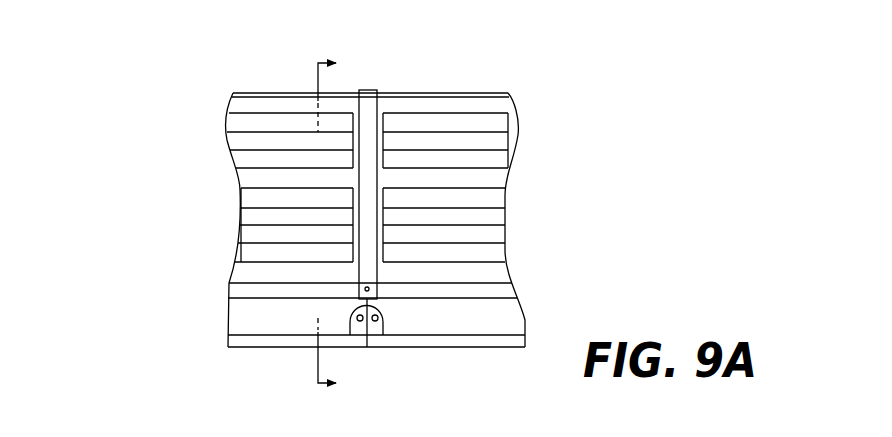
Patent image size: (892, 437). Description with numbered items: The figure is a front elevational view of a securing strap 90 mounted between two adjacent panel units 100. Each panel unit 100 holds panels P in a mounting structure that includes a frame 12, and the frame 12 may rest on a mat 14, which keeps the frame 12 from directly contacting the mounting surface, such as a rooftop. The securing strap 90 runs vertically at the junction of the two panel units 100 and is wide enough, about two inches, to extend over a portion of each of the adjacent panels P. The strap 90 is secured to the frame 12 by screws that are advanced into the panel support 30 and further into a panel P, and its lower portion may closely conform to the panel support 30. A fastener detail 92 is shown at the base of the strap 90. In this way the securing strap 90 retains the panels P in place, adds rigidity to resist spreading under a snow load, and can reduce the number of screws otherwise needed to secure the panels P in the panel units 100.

The panel unit 100 is at (207, 188).
The securing strap 90 is at (373, 107).
The fastener bracket 92 is at (368, 289).
The panel support 30 is at (238, 291).
The frame 12 is at (278, 330).
The mat 14 is at (336, 343).
The panel P is at (270, 188).